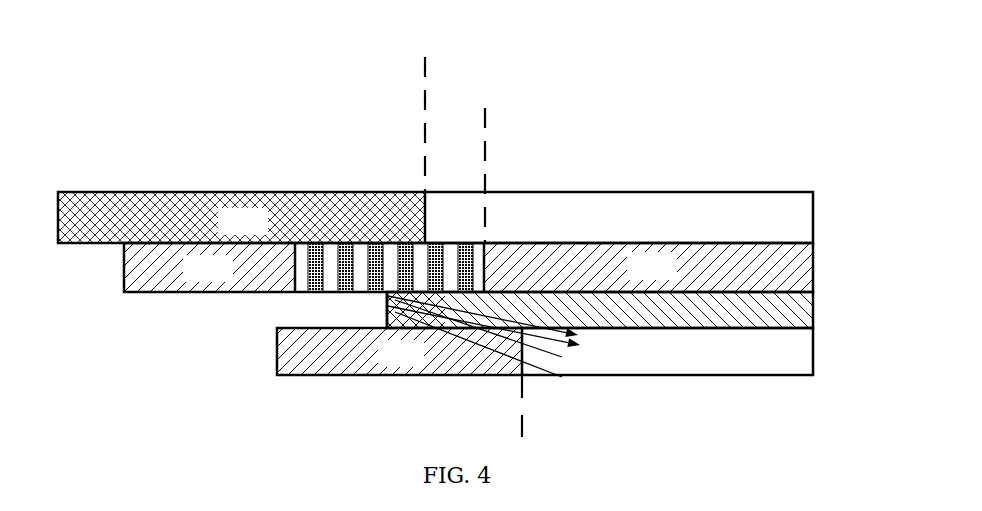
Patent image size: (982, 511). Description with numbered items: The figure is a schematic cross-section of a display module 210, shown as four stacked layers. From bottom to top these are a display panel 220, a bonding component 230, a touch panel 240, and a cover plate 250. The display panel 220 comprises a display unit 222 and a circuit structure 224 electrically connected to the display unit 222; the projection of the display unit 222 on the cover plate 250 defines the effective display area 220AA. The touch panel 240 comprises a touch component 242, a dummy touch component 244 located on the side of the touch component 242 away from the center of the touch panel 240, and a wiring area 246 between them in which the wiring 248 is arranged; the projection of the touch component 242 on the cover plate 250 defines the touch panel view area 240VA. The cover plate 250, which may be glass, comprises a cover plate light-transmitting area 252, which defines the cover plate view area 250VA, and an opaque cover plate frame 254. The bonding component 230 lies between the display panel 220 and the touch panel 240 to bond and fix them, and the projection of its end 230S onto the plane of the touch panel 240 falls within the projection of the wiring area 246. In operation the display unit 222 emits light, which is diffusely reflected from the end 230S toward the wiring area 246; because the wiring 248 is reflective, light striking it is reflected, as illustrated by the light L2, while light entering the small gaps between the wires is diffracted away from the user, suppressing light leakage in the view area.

The display module 210 is at (98, 83).
The cover plate 250 is at (462, 217).
The cover plate light-transmitting area 252 is at (619, 217).
The cover plate frame 254 is at (241, 217).
The touch panel 240 is at (495, 211).
The touch component 242 is at (648, 267).
The dummy touch component 244 is at (209, 267).
The wiring area 246 is at (303, 262).
The wiring 248 is at (372, 262).
The bonding component 230 is at (558, 310).
The end of the bonding component 230S is at (383, 309).
The display panel 220 is at (571, 351).
The display unit 222 is at (667, 351).
The circuit structure 224 is at (399, 351).
The cover plate view area 250VA is at (437, 92).
The touch panel view area 240VA is at (595, 140).
The effective display area 220AA is at (632, 422).
The light L2 is at (501, 336).